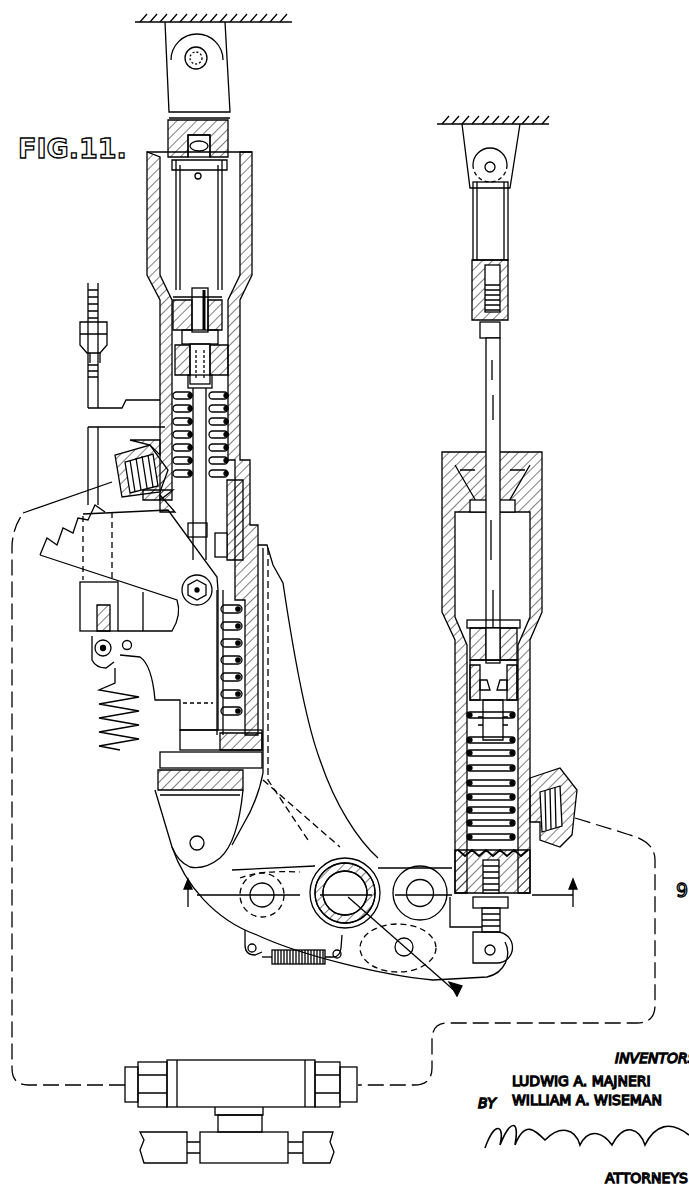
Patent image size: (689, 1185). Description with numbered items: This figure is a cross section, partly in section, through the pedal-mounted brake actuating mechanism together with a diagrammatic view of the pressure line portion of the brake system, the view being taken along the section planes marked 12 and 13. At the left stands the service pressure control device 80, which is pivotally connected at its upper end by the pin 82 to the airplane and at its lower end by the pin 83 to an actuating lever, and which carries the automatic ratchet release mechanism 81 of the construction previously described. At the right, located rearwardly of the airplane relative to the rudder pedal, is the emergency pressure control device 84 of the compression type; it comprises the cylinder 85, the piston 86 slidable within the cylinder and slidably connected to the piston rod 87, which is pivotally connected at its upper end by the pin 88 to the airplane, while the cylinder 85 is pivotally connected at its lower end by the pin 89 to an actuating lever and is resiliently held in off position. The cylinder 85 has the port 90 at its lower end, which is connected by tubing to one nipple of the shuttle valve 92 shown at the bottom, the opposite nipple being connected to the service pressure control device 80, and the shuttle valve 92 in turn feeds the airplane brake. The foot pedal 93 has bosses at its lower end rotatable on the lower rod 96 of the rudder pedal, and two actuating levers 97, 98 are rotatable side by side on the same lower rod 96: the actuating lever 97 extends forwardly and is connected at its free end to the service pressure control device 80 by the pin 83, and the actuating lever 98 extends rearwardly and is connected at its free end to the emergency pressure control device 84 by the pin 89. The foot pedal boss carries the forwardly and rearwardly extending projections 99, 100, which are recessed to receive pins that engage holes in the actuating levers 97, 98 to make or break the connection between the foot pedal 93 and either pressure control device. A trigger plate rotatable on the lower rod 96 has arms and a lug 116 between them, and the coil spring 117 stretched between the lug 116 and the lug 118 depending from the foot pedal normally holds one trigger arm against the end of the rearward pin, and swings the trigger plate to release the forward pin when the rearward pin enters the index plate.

The service pressure control device 80 is at (238, 343).
The automatic ratchet release mechanism 81 is at (77, 575).
The pin 82 is at (210, 58).
The pin 83 is at (187, 843).
The emergency pressure control device 84 is at (542, 586).
The cylinder 85 is at (527, 680).
The piston 86 is at (517, 643).
The piston rod 87 is at (493, 560).
The pin 88 is at (495, 168).
The pin 89 is at (500, 952).
The port 90 is at (557, 808).
The shuttle valve 92 is at (253, 1060).
The foot pedal 93 is at (290, 642).
The lower rod 96 is at (358, 868).
The actuating lever 97 is at (226, 913).
The actuating lever 98 is at (422, 980).
The forwardly extending projection 99 is at (302, 962).
The rearwardly extending projection 100 is at (383, 957).
The lug 116 is at (342, 957).
The coil spring 117 is at (287, 960).
The lug 118 is at (247, 948).
The section line 12- 12 is at (385, 893).
The section line 13- 13 is at (416, 955).